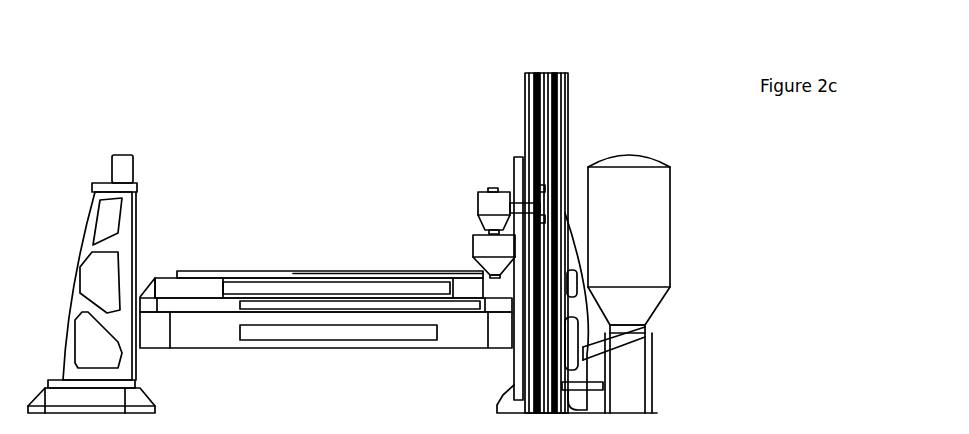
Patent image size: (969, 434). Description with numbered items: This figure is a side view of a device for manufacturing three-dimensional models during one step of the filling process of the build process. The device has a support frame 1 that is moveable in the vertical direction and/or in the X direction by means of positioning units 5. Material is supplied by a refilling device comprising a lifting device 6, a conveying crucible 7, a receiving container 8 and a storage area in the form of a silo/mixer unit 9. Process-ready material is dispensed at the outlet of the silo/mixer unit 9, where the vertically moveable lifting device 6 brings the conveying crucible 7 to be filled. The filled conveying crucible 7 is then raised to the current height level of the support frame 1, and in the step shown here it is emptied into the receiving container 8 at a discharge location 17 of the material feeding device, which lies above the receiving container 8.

The support frame 1 is at (193, 325).
The positioning unit 5 is at (85, 252).
The lifting device 6 is at (532, 93).
The conveying crucible 7 is at (495, 202).
The discharge location 17 is at (479, 212).
The receiving container 8 is at (488, 247).
The silo/mixer unit 9 is at (633, 227).